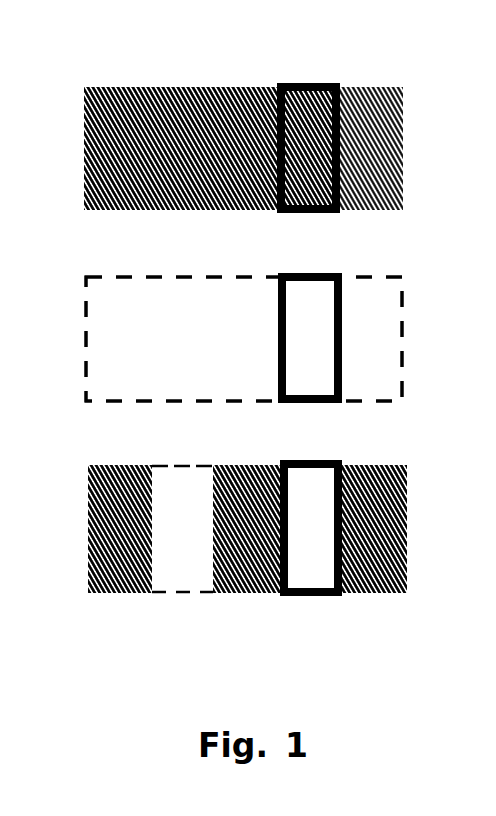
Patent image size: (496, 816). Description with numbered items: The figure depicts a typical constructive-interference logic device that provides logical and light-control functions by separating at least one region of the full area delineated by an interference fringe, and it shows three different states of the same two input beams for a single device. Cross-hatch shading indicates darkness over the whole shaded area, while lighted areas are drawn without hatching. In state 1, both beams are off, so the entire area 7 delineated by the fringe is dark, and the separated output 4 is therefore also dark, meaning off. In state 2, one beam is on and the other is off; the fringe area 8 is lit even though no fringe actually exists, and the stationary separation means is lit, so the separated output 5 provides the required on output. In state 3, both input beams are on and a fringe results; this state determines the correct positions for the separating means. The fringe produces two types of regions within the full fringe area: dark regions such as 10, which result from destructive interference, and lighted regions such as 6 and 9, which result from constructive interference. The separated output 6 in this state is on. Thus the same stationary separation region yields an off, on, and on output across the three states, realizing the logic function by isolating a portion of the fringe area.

The state 1 is at (417, 126).
The state 2 is at (429, 319).
The state 3 is at (426, 509).
The separated output 4 is at (313, 85).
The separated output 5 is at (310, 382).
The separated output 6 is at (310, 567).
The entire area 7 is at (100, 155).
The fringe area 8 is at (108, 353).
The lighted region 9 is at (177, 570).
The dark region 10 is at (97, 522).